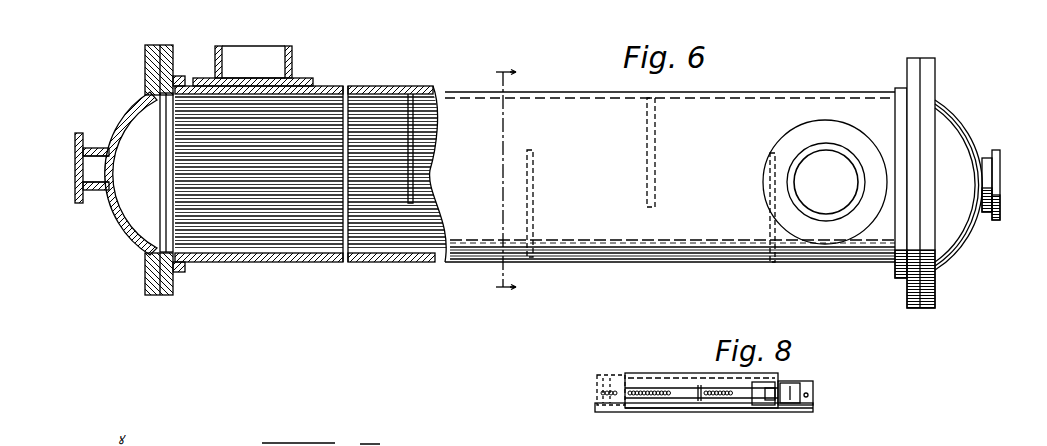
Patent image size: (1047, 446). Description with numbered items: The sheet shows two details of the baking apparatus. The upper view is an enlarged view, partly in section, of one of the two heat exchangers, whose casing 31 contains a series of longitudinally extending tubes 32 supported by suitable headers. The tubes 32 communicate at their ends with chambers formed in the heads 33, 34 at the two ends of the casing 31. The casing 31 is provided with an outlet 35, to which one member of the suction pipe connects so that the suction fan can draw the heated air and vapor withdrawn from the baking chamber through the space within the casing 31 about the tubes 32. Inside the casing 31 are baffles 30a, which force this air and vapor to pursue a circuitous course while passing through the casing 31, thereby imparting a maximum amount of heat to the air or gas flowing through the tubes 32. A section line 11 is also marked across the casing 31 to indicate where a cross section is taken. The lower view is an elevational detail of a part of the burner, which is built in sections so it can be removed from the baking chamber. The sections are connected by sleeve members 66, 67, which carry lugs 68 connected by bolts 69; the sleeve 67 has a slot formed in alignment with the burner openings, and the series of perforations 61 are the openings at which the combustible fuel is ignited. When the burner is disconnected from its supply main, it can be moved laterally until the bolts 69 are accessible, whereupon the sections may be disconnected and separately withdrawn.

In FIG. 6, the section line 11- 11 is at (517, 180).
In FIG. 6, the baffles 30a is at (647, 185).
In FIG. 6, the heat exchanger casing 31 is at (602, 108).
In FIG. 6, the tubes 32 is at (306, 102).
In FIG. 6, the head 33 is at (121, 250).
In FIG. 6, the head 34 is at (956, 246).
In FIG. 6, the outlet 35 is at (813, 164).
In FIG. 8, the perforations 61 is at (624, 382).
In FIG. 8, the sleeve member 66 is at (721, 411).
In FIG. 8, the sleeve member 67 is at (680, 356).
In FIG. 8, the lugs 68 is at (772, 390).
In FIG. 8, the bolts 69 is at (792, 398).